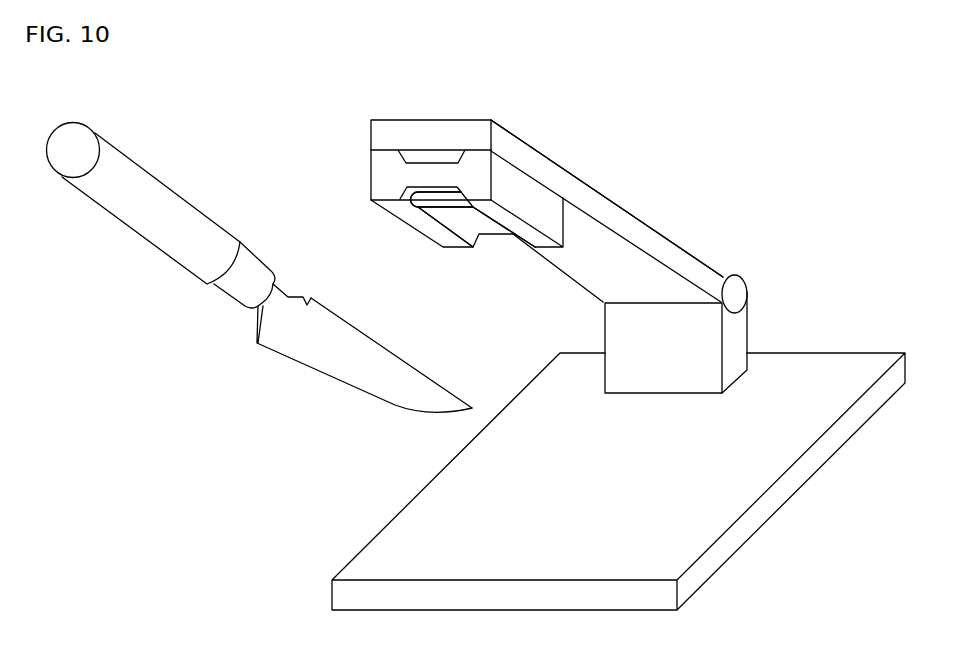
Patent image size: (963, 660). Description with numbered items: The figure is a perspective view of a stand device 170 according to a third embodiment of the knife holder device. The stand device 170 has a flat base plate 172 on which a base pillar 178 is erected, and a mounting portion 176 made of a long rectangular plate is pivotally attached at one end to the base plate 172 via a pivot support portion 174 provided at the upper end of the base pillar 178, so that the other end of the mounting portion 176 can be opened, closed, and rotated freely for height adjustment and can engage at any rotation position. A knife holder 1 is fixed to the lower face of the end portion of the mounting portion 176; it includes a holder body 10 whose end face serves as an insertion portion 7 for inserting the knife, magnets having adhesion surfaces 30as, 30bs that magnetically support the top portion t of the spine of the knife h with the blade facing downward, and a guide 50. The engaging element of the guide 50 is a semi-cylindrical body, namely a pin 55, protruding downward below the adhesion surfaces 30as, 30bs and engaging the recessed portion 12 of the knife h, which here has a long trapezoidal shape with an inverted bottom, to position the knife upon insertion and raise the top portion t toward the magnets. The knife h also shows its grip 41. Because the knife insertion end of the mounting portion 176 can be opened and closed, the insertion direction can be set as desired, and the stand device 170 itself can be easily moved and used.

The grip 41 is at (128, 170).
The recessed portion 12 is at (288, 290).
The top portion t is at (342, 318).
The knife h is at (258, 386).
The insertion portion 7 is at (338, 201).
The holder body 10 is at (520, 193).
The mounting portion 176 is at (502, 138).
The knife holder 1 is at (524, 270).
The guide 50 is at (430, 202).
The pin 55 is at (442, 199).
The adhesion surface 30as is at (472, 225).
The adhesion surface 30bs is at (445, 227).
The stand device 170 is at (765, 172).
The pivot support portion 174 is at (773, 258).
The base pillar 178 is at (735, 340).
The base plate 172 is at (742, 478).